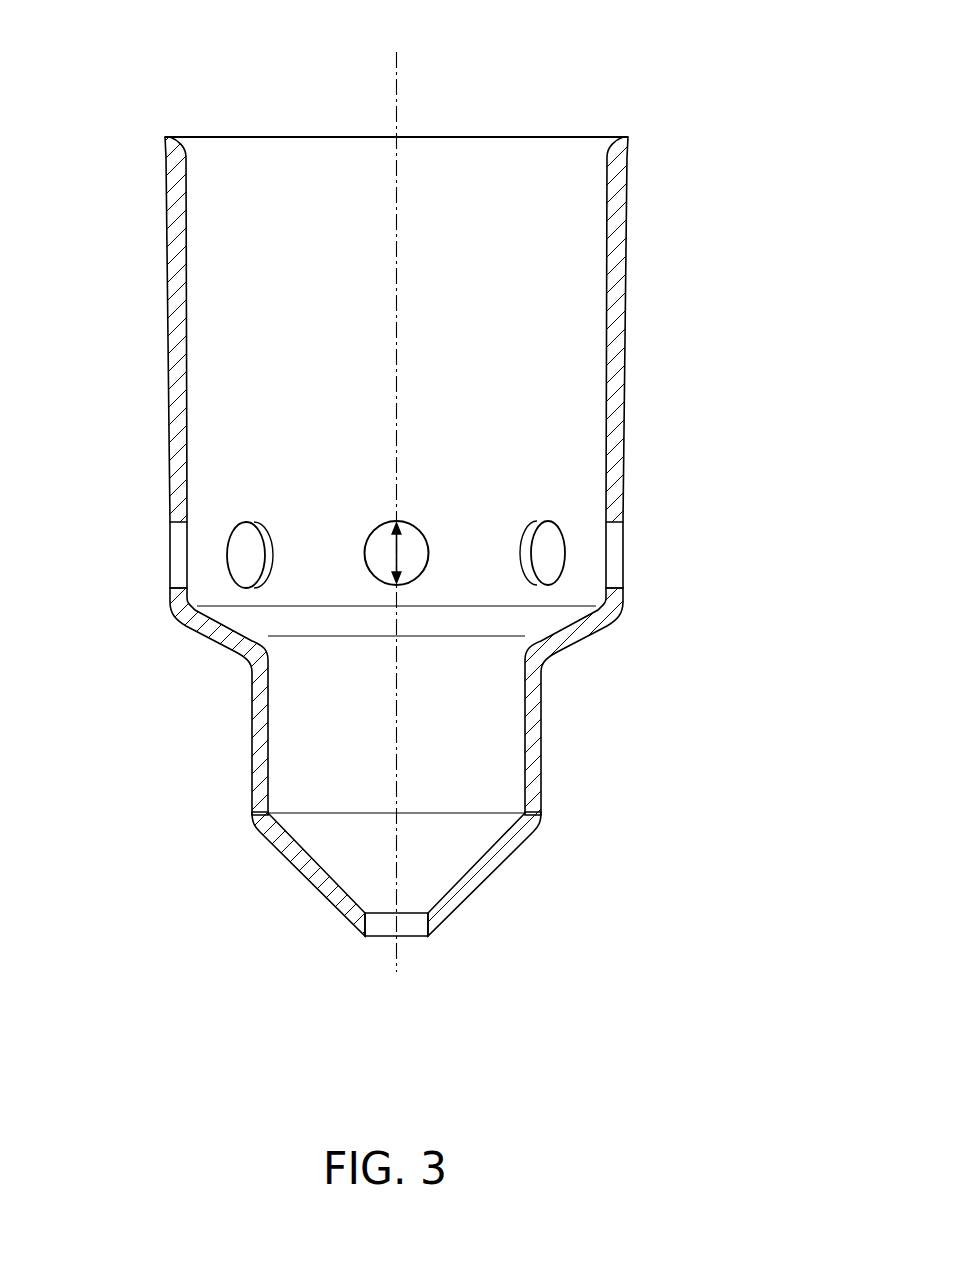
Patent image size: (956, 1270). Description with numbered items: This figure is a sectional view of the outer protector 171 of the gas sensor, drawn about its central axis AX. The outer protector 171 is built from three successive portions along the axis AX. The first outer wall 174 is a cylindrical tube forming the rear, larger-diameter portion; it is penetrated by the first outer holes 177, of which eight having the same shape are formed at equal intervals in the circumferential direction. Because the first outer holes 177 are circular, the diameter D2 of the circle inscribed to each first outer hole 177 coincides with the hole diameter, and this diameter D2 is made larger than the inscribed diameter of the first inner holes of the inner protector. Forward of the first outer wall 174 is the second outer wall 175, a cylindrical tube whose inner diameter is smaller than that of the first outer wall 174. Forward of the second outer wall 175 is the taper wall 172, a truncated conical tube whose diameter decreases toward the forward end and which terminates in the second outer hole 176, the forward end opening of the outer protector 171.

The outer protector 171 is at (395, 540).
The taper wall 172 is at (290, 857).
The first outer wall 174 is at (178, 389).
The second outer wall 175 is at (253, 730).
The second outer hole 176 is at (420, 925).
The first outer holes 177 is at (262, 560).
The diameter of inscribed circle of first outer hole D2 is at (393, 552).
The axis AX is at (397, 53).